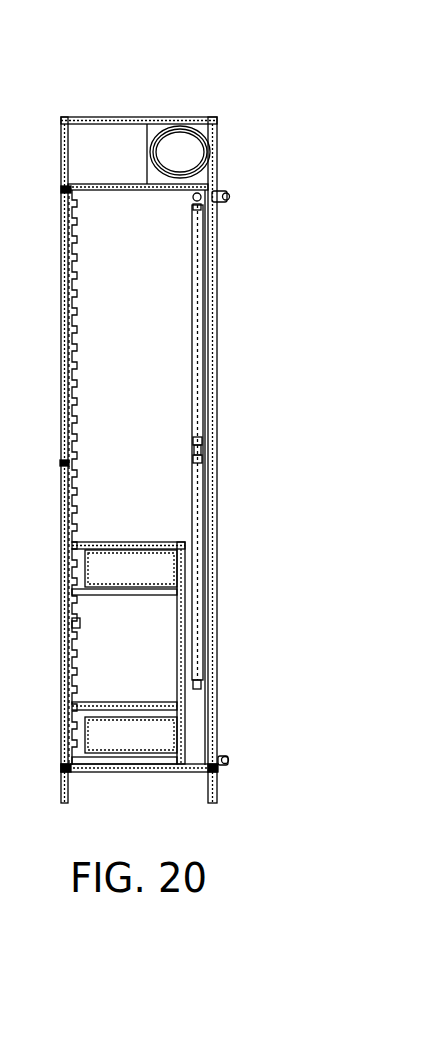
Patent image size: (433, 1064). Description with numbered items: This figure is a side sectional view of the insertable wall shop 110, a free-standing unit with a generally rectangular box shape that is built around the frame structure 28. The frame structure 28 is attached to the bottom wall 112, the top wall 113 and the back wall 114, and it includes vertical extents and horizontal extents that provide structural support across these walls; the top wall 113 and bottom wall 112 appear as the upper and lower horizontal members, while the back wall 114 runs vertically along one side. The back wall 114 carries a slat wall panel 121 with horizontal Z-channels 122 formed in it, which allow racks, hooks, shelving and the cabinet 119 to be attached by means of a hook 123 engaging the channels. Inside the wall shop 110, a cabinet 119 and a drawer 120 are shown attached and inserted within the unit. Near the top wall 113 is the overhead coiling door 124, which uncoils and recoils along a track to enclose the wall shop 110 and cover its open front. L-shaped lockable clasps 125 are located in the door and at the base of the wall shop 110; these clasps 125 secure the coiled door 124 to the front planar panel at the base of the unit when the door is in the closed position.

The insertable wall shop 110 is at (232, 88).
The frame structure 28 is at (135, 117).
The back wall 114 is at (62, 520).
The top wall 113 is at (128, 190).
The overhead coiling door 124 is at (190, 150).
The L-shaped lockable clasps 125 is at (230, 197).
The slat wall panel 121 is at (80, 306).
The horizontal Z-channels 122 is at (76, 370).
The cabinet 119 is at (157, 567).
The drawer 120 is at (135, 690).
The hook 123 is at (80, 633).
The bottom wall 112 is at (200, 756).